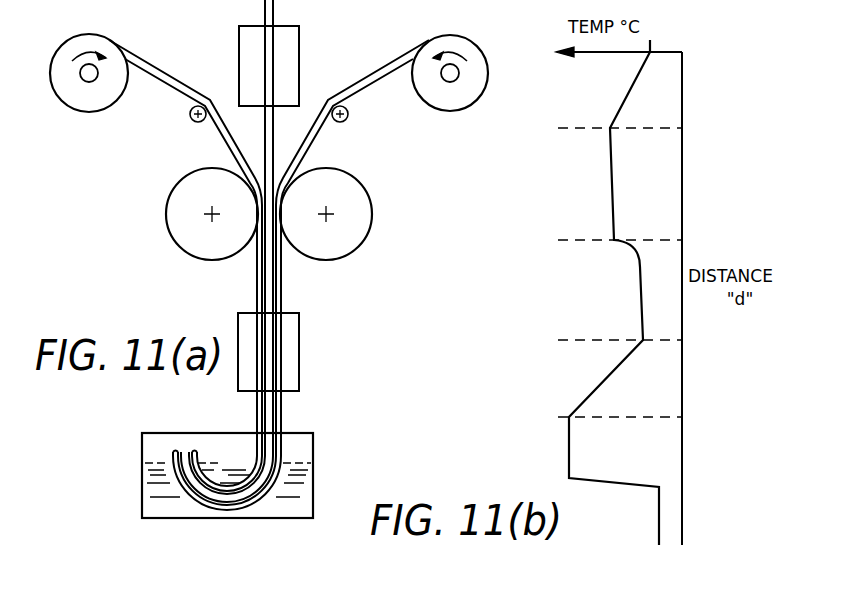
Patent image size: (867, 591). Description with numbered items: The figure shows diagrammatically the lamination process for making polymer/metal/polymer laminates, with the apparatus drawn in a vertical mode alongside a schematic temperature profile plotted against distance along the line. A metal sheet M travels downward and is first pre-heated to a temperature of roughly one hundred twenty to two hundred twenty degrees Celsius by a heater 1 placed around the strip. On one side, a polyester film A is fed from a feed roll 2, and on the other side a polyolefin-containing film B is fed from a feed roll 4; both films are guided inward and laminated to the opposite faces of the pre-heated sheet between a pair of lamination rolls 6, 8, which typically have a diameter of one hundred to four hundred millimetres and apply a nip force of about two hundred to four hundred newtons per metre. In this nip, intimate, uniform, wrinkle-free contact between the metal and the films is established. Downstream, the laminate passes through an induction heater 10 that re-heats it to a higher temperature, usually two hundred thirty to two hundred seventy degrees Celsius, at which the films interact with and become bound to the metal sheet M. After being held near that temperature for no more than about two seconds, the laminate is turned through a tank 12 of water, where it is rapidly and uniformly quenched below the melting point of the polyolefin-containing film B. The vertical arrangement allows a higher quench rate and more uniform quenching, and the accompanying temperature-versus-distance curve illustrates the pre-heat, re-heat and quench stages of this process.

The heater 1 is at (292, 62).
The feed roll 2 is at (95, 106).
The feed roll 4 is at (456, 108).
The lamination roll 6 is at (176, 232).
The lamination roll 8 is at (363, 218).
The induction heater 10 is at (296, 362).
The tank 12 is at (307, 488).
The metal sheet M is at (268, 10).
The polyester film A is at (163, 68).
The polyolefin-containing film B is at (370, 78).